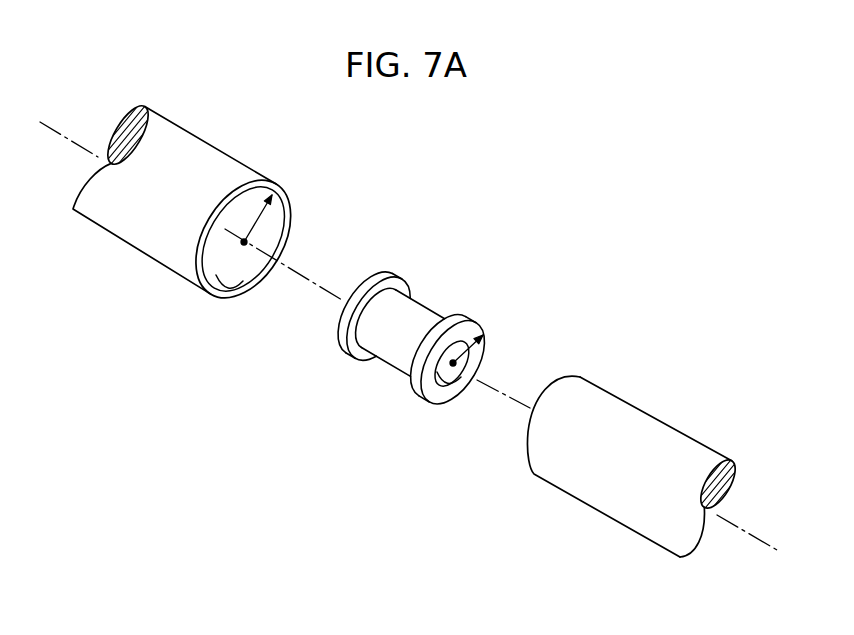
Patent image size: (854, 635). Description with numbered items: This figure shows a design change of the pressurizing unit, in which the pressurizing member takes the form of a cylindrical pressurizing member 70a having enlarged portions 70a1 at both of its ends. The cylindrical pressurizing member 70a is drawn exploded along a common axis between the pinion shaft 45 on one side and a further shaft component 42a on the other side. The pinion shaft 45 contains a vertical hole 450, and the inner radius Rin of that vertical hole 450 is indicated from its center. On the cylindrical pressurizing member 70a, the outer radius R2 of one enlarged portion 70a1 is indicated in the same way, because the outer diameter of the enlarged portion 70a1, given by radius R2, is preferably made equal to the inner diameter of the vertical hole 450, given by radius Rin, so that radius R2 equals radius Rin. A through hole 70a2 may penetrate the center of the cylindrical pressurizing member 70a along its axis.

The pinion shaft 45 is at (220, 152).
The vertical hole 450 is at (238, 288).
The inner radius of the vertical hole Rin is at (258, 218).
The cylindrical pressurizing member 70a is at (395, 364).
The enlarged portion 70a1 is at (381, 277).
The through hole 70a2 is at (451, 385).
The outer radius of the enlarged portion R2 is at (470, 357).
The shaft 42a is at (630, 410).